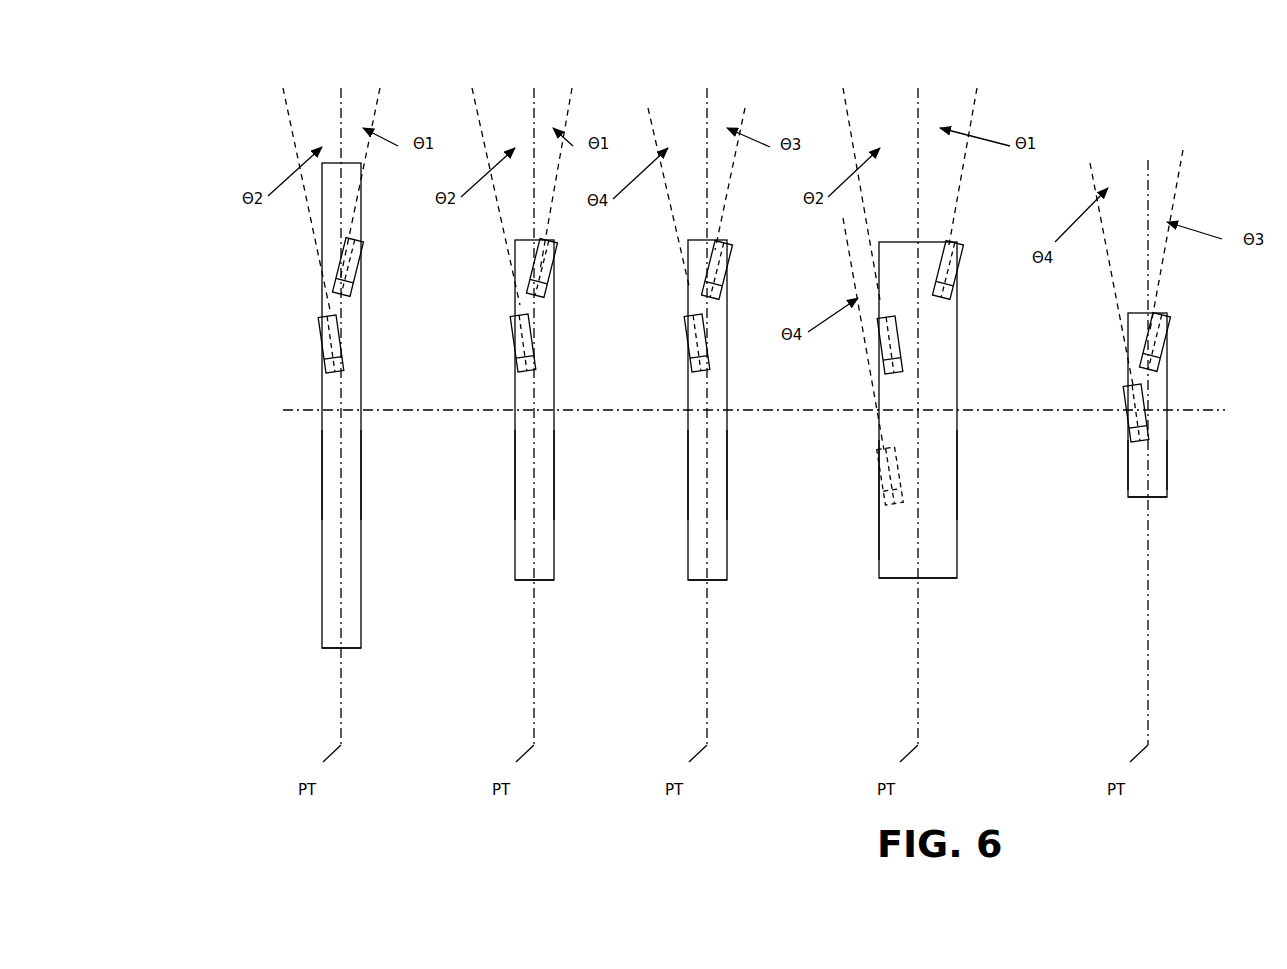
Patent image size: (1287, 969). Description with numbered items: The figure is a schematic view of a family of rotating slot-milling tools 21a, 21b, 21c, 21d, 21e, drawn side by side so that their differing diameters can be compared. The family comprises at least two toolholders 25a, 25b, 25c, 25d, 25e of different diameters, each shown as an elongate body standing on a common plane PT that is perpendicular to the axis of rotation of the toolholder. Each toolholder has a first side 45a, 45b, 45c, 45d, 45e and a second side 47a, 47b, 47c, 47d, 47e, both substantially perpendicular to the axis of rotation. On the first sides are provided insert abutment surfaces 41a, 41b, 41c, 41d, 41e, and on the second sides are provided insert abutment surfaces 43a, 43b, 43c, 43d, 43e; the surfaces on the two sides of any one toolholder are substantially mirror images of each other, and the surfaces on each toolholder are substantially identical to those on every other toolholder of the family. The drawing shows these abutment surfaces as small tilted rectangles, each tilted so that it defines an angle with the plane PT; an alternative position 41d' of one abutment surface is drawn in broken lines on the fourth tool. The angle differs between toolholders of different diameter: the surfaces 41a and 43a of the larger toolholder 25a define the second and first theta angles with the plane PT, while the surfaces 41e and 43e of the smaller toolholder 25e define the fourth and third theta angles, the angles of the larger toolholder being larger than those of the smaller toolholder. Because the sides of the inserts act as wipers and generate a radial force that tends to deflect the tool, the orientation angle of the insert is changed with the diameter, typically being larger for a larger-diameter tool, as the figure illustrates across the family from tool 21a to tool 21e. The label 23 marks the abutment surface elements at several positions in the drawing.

The slot-milling tool 21a is at (262, 600).
The slot-milling tool 21b is at (475, 583).
The slot-milling tool 21c is at (667, 583).
The slot-milling tool 21d is at (858, 585).
The slot-milling tool 21e is at (1210, 510).
The transducer element 23 is at (741, 349).
The toolholder 25a is at (334, 651).
The toolholder 25b is at (533, 585).
The toolholder 25c is at (706, 585).
The toolholder 25d is at (914, 583).
The toolholder 25e is at (1145, 500).
The insert abutment surface 41a is at (338, 352).
The insert abutment surface 41b is at (527, 357).
The insert abutment surface 41c is at (700, 357).
The insert abutment surface 41d is at (851, 349).
The first transducer (alternate position) 41d' is at (840, 469).
The insert abutment surface 41e is at (1147, 427).
The insert abutment surface 43a is at (342, 280).
The insert abutment surface 43b is at (535, 282).
The insert abutment surface 43c is at (707, 282).
The insert abutment surface 43d is at (940, 282).
The insert abutment surface 43e is at (1147, 353).
The first side 45a is at (320, 483).
The first side 45b is at (515, 505).
The first side 45c is at (688, 505).
The first side 45d is at (878, 535).
The first side 45e is at (1127, 460).
The second side 47a is at (358, 500).
The second side 47b is at (553, 505).
The second side 47c is at (727, 505).
The second side 47d is at (958, 505).
The second side 47e is at (1167, 478).